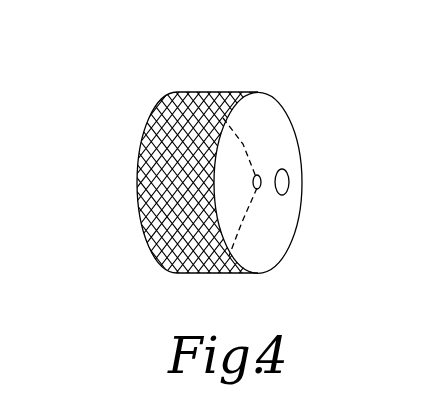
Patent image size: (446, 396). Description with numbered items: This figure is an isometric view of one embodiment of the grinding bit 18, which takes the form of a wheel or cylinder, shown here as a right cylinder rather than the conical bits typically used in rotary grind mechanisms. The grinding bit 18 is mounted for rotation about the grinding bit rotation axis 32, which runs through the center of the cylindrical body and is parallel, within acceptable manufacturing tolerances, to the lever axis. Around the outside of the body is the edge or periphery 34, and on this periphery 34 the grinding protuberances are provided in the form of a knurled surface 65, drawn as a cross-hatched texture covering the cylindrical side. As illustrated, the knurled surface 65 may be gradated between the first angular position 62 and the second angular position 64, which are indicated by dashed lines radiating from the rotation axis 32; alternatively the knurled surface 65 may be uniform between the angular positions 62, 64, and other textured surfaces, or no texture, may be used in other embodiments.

The grinding bit 18 is at (338, 80).
The grinding bit rotation axis 32 is at (260, 179).
The periphery 34 is at (220, 92).
The first angular position 62 is at (243, 144).
The second angular position 64 is at (242, 222).
The knurled surface 65 is at (158, 120).